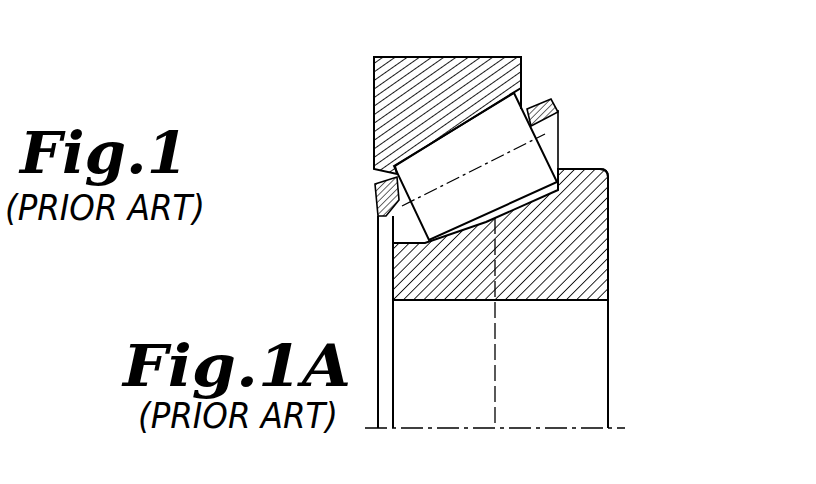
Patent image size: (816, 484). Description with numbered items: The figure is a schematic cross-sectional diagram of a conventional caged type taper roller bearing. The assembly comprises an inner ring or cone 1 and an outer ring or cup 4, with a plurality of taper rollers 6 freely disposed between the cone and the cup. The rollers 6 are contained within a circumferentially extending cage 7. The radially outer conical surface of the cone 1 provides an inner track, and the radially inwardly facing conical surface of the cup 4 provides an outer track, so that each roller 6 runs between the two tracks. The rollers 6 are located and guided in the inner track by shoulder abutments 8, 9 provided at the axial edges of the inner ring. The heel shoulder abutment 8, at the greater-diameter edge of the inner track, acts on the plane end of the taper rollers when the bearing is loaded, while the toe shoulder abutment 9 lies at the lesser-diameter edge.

The inner ring or cone 1 is at (607, 247).
The outer ring or cup 4 is at (451, 72).
The rollers 6 is at (425, 158).
The cage 7 is at (555, 121).
The heel shoulder abutment 8 is at (581, 169).
The toe shoulder abutment 9 is at (394, 257).